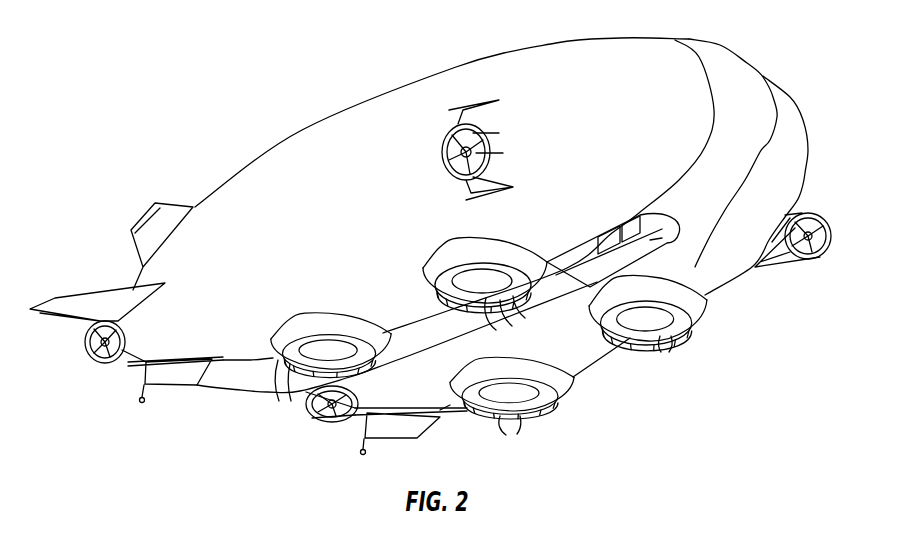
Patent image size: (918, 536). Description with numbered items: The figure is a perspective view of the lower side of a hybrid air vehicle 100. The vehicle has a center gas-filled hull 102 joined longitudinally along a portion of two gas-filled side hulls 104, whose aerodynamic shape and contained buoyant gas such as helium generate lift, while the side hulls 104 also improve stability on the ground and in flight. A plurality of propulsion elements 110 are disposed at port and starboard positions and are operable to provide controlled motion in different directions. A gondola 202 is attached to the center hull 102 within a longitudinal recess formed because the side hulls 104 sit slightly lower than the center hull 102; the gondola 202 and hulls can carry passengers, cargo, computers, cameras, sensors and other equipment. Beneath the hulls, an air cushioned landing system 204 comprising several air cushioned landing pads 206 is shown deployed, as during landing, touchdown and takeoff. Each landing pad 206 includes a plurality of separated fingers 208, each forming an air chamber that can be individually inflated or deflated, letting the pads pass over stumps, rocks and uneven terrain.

The hybrid air vehicle 100 is at (294, 82).
The center gas-filled hull 102 is at (757, 117).
The gas-filled side hulls 104 is at (642, 113).
The propulsion elements 110 is at (468, 80).
The gondola 202 is at (676, 229).
The air cushioned landing system (ACLS) 204 is at (630, 362).
The air cushioned landing pads 206 is at (250, 372).
The fingers 208 is at (290, 402).